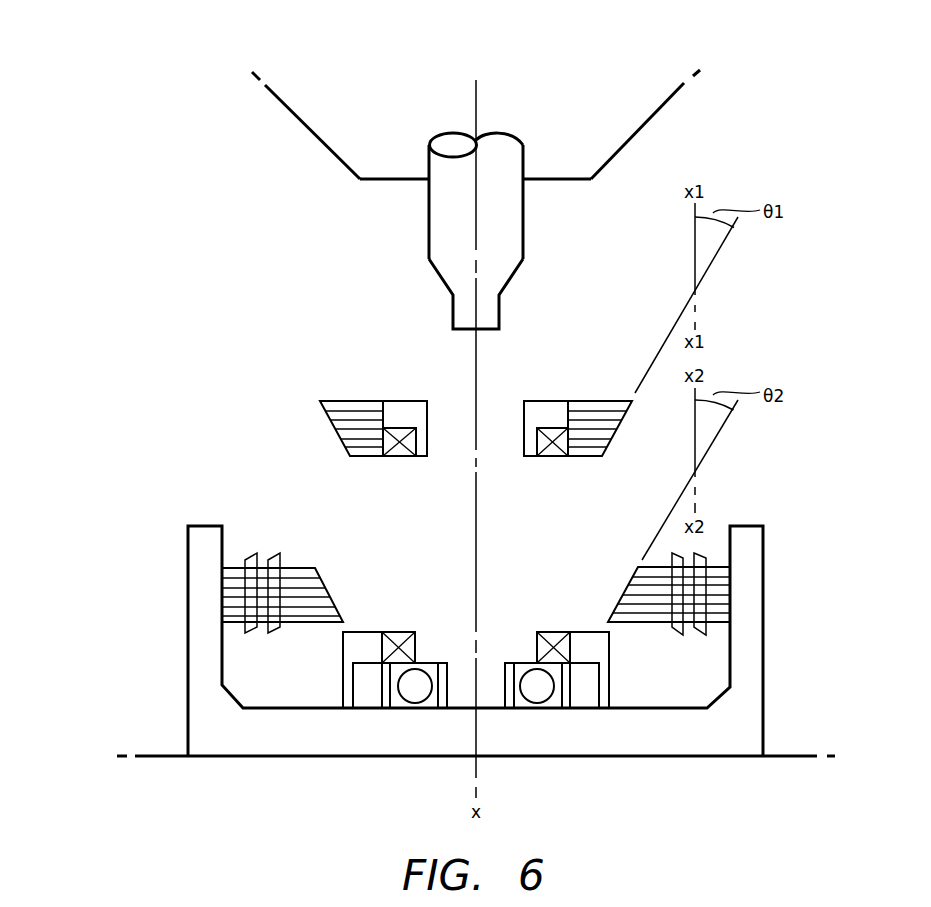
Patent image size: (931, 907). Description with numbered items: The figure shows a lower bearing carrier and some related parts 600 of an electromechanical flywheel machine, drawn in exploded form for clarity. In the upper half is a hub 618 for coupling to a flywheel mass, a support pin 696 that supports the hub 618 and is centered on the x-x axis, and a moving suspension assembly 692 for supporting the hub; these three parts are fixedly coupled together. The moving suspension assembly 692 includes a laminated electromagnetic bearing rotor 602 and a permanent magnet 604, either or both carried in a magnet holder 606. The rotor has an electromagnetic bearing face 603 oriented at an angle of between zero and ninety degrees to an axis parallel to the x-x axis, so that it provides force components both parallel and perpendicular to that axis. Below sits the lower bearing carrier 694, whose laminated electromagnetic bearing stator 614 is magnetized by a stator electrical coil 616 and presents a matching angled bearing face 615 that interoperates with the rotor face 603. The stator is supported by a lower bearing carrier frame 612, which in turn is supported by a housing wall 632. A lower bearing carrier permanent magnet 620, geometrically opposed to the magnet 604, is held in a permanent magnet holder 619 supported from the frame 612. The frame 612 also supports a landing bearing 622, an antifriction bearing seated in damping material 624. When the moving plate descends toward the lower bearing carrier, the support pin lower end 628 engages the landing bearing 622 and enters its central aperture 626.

The lower bearing carrier and related parts 600 is at (216, 167).
The hub 618 is at (379, 181).
The support pin 696 is at (507, 223).
The support pin lower end 628 is at (495, 317).
The moving suspension assembly 692 is at (312, 419).
The moving suspension assembly electromagnetic bearing rotor 602 is at (350, 412).
The moving suspension assembly magnet holder 606 is at (407, 412).
The moving suspension assembly permanent magnet 604 is at (398, 450).
The moving suspension assembly electromagnetic bearing face 603 is at (614, 435).
The lower bearing carrier 694 is at (205, 509).
The lower bearing carrier frame 612 is at (738, 743).
The housing wall 632 is at (803, 755).
The lower bearing carrier electromagnetic bearing stator 614 is at (297, 580).
The lower bearing carrier stator electrical coil 616 is at (262, 556).
The lower bearing carrier electromagnetic bearing face 615 is at (630, 573).
The lower bearing carrier permanent magnet holder 619 is at (362, 642).
The lower bearing carrier permanent magnet 620 is at (402, 637).
The lower bearing carrier landing bearing 622 is at (360, 754).
The damping material 624 is at (363, 677).
The central aperture of landing bearing 626 is at (495, 682).